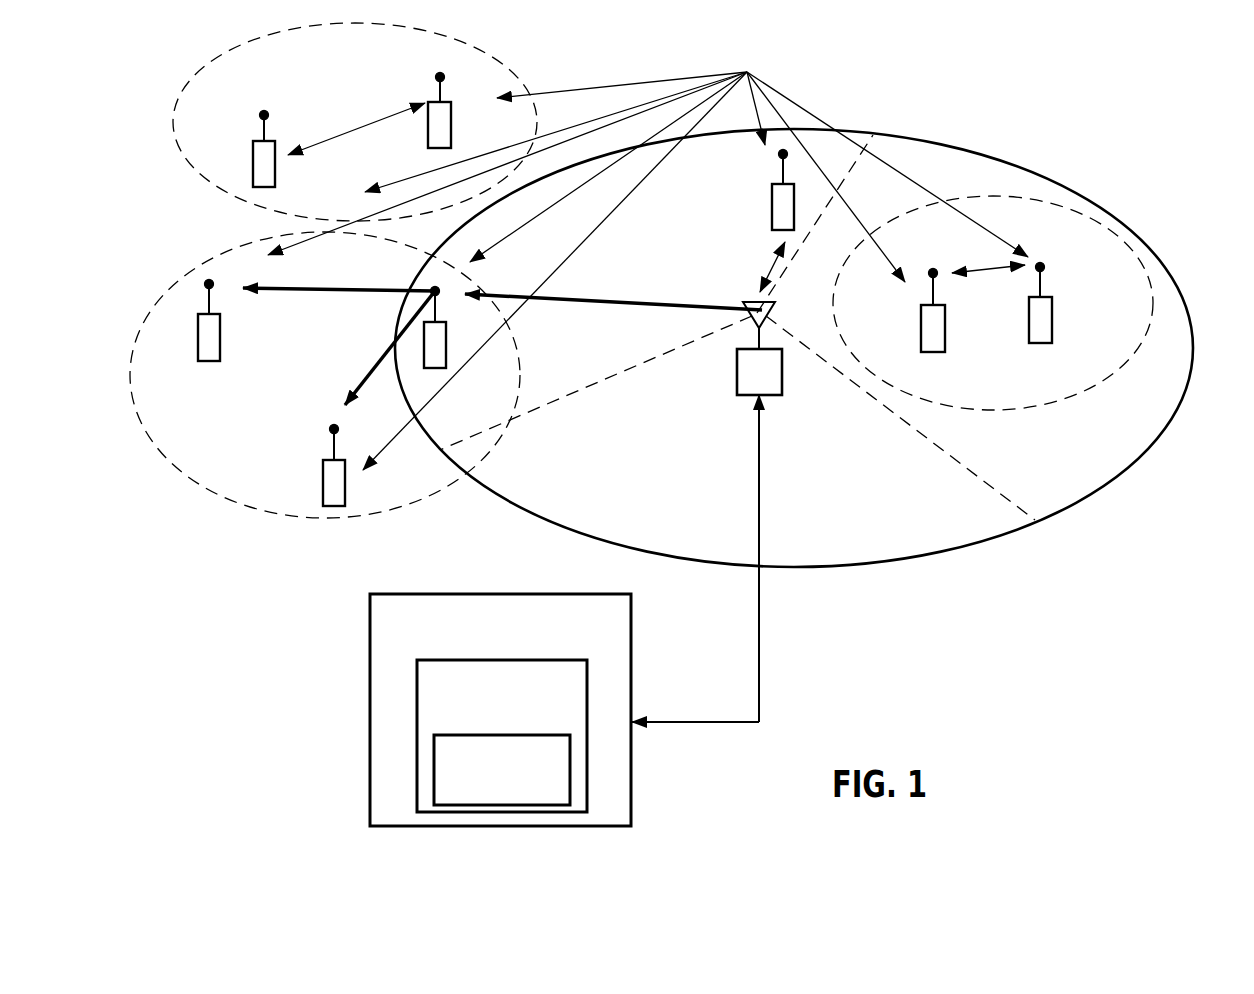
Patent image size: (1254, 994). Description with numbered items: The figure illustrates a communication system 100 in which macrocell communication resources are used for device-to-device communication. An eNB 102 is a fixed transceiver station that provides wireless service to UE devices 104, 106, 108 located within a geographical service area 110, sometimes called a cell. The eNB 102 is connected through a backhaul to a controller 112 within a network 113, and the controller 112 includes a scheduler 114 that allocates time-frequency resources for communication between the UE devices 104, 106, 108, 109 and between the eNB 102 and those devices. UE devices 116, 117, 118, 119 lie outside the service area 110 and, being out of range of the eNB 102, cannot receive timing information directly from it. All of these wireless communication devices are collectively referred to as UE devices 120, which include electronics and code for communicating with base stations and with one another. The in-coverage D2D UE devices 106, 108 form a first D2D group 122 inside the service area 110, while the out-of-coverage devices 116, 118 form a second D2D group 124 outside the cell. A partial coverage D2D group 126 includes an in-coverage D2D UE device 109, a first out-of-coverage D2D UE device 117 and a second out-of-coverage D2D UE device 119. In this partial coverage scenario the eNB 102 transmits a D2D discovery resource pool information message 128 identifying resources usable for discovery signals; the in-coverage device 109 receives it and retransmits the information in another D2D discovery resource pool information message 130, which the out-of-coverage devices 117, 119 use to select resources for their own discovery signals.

The communication system 100 is at (807, 624).
The eNB 102 is at (772, 395).
The wireless communication UE device 104 is at (771, 207).
The in coverage D2D UE device 106 is at (1053, 320).
The in coverage D2D UE device 108 is at (945, 352).
The InC D2D UE device 109 is at (447, 343).
The geographical service area 110 is at (972, 152).
The controller 112 is at (502, 736).
The network 113 is at (500, 710).
The scheduler 114 is at (502, 770).
The OoC D2D UE device 116 is at (253, 163).
The first OoC D2D UE device 117 is at (323, 483).
The OoC D2D UE device 118 is at (453, 133).
The second OoC D2D UE device 119 is at (199, 337).
The UE devices 120 is at (648, 255).
The first D2D group 122 is at (1108, 224).
The D2D group 124 is at (505, 68).
The partial coverage D2D group 126 is at (222, 258).
The D2D discovery resource pool information message 128 is at (716, 312).
The D2D discovery resource pool information message 130 is at (407, 295).